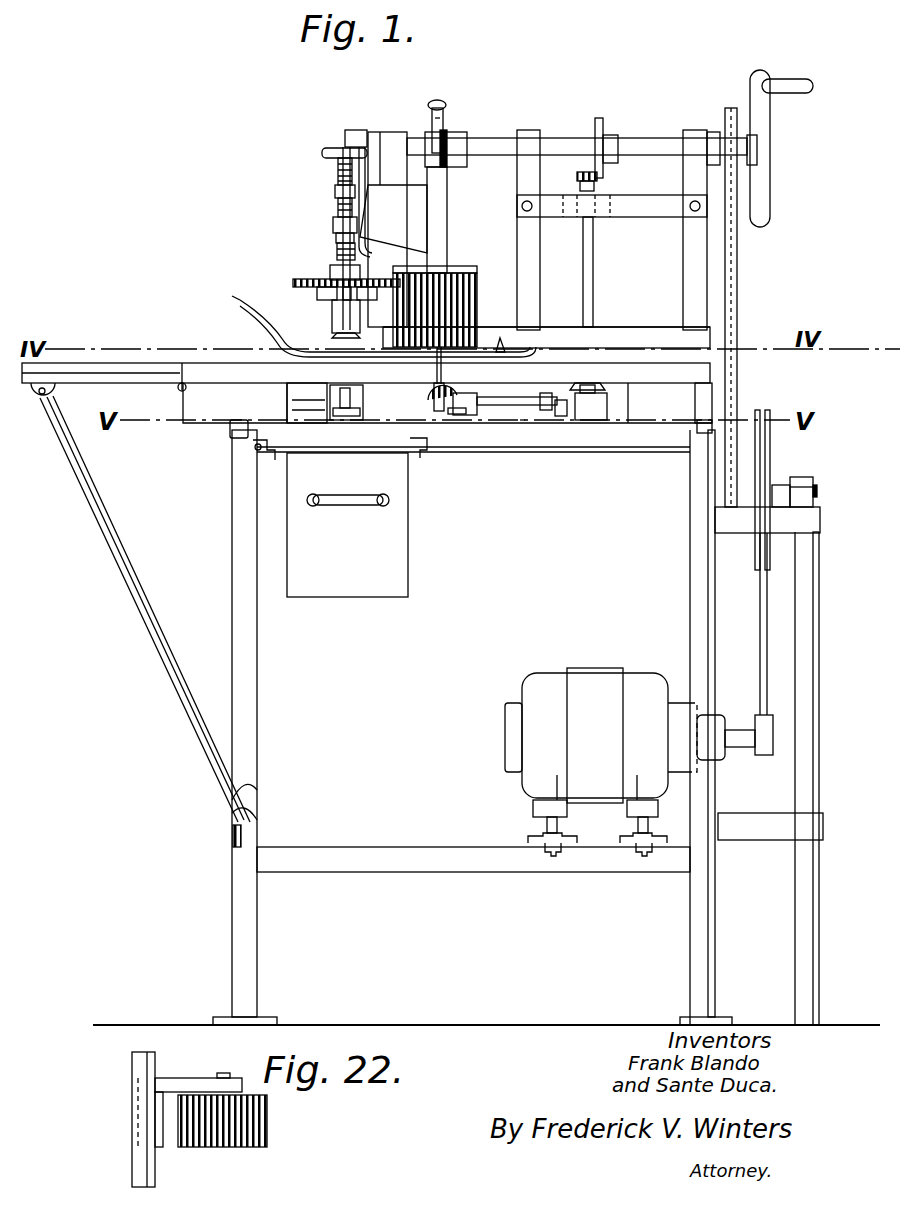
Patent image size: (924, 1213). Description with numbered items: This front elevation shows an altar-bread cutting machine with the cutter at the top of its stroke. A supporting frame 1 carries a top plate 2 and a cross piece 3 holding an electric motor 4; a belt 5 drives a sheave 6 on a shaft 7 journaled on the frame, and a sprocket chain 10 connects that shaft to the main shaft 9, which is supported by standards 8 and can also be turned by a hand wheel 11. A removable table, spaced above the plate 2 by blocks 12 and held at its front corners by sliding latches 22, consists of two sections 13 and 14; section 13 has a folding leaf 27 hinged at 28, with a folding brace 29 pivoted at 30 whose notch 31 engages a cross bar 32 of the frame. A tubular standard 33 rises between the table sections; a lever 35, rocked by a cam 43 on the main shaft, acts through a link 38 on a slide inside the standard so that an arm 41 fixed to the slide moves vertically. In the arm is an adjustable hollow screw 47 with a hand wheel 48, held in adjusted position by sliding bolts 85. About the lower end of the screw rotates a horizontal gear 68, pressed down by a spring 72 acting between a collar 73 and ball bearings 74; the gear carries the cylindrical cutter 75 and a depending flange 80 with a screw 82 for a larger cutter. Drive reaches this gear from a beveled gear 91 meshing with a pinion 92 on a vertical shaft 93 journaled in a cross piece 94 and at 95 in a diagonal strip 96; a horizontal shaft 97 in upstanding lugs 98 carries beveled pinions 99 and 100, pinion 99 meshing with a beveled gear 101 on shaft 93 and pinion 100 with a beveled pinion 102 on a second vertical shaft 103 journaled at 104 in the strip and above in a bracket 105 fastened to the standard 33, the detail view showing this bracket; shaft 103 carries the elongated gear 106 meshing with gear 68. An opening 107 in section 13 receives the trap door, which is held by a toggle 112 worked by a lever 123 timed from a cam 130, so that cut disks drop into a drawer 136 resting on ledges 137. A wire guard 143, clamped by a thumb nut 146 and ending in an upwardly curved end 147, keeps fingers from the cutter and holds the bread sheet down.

In FIG. 1, the supporting frame 1 is at (258, 662).
In FIG. 1, the top plate 2 is at (520, 425).
In FIG. 1, the cross piece 3 is at (432, 850).
In FIG. 1, the electric motor 4 is at (601, 762).
In FIG. 1, the belt 5 is at (760, 645).
In FIG. 1, the sheave 6 is at (772, 455).
In FIG. 1, the shaft 7 is at (800, 478).
In FIG. 1, the standards 8 is at (390, 160).
In FIG. 1, the main shaft 9 is at (557, 143).
In FIG. 1, the sprocket chain 10 is at (738, 300).
In FIG. 1, the hand wheel 11 is at (758, 80).
In FIG. 1, the blocks 12 is at (700, 400).
In FIG. 1, the table section 13 is at (228, 368).
In FIG. 1, the table section 14 is at (610, 357).
In FIG. 1, the sliding latches 22 is at (237, 432).
In FIG. 1, the folding leaf 27 is at (105, 365).
In FIG. 1, the hinge 28 is at (180, 391).
In FIG. 1, the folding brace 29 is at (125, 575).
In FIG. 1, the pivot 30 is at (54, 394).
In FIG. 1, the notch 31 is at (250, 820).
In FIG. 1, the cross bar 32 is at (232, 833).
In FIG. 1, the standard 33 is at (447, 215).
In FIG. 22, the standard 33 is at (132, 1068).
In FIG. 1, the lever 35 is at (436, 100).
In FIG. 1, the link 38 is at (443, 122).
In FIG. 1, the arm 41 is at (393, 219).
In FIG. 1, the cam 43 is at (447, 137).
In FIG. 1, the hollow screw 47 is at (338, 175).
In FIG. 1, the hand wheel 48 is at (322, 153).
In FIG. 1, the horizontal gear 68 is at (293, 281).
In FIG. 1, the spring 72 is at (337, 255).
In FIG. 1, the collar 73 is at (335, 243).
In FIG. 1, the ball bearings 74 is at (330, 272).
In FIG. 1, the cylindrical cutter 75 is at (345, 335).
In FIG. 1, the segmental annular flange 80 is at (317, 293).
In FIG. 1, the screw 82 is at (330, 338).
In FIG. 1, the sliding bolts 85 is at (367, 200).
In FIG. 1, the beveled gear 91 is at (598, 128).
In FIG. 1, the pinion 92 is at (577, 178).
In FIG. 1, the vertical shaft 93 is at (594, 278).
In FIG. 1, the cross piece 94 is at (655, 190).
In FIG. 1, the journal 95 is at (600, 420).
In FIG. 1, the strip 96 is at (542, 410).
In FIG. 1, the horizontal shaft 97 is at (505, 405).
In FIG. 1, the upstanding lugs 98 is at (560, 415).
In FIG. 1, the beveled pinion 99 is at (607, 402).
In FIG. 1, the beveled pinion 100 is at (462, 413).
In FIG. 1, the beveled gear 101 is at (605, 392).
In FIG. 1, the beveled pinion 102 is at (438, 393).
In FIG. 1, the vertical shaft 103 is at (430, 388).
In FIG. 1, the journal 104 is at (423, 455).
In FIG. 1, the bracket 105 is at (442, 268).
In FIG. 22, the bracket 105 is at (185, 1080).
In FIG. 1, the elongated gear 106 is at (468, 305).
In FIG. 22, the elongated gear 106 is at (268, 1125).
In FIG. 22, the opening 107 is at (225, 1073).
In FIG. 1, the toggle 112 is at (338, 392).
In FIG. 1, the lever 123 is at (290, 400).
In FIG. 1, the cam 130 is at (345, 136).
In FIG. 1, the container or drawer 136 is at (347, 525).
In FIG. 1, the ledges 137 is at (262, 460).
In FIG. 1, the guard 143 is at (455, 350).
In FIG. 1, the thumb nut 146 is at (508, 348).
In FIG. 1, the upwardly curved end 147 is at (241, 298).